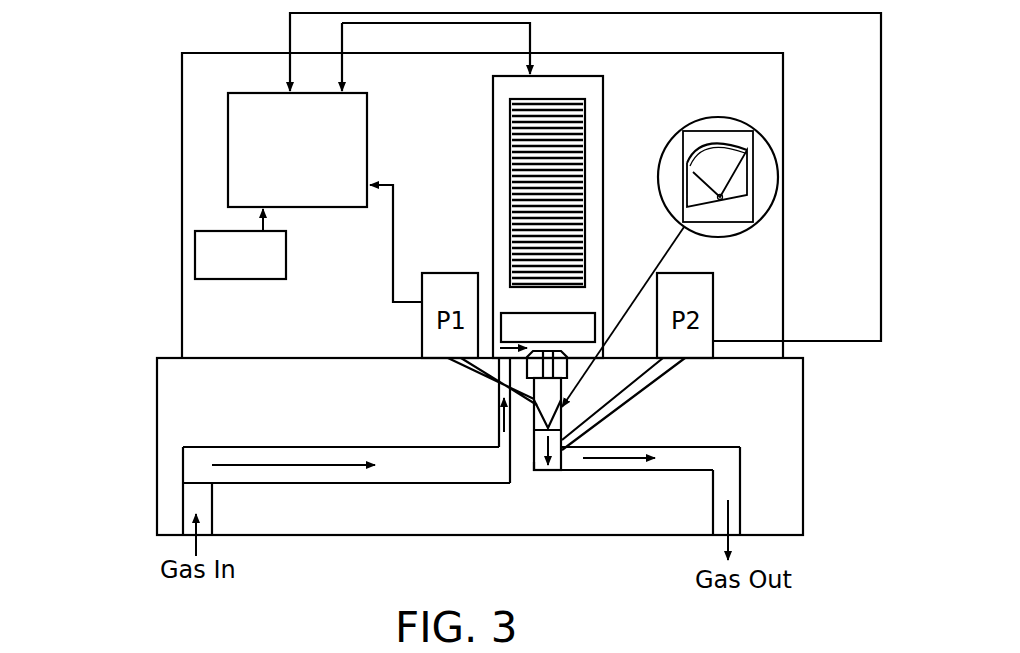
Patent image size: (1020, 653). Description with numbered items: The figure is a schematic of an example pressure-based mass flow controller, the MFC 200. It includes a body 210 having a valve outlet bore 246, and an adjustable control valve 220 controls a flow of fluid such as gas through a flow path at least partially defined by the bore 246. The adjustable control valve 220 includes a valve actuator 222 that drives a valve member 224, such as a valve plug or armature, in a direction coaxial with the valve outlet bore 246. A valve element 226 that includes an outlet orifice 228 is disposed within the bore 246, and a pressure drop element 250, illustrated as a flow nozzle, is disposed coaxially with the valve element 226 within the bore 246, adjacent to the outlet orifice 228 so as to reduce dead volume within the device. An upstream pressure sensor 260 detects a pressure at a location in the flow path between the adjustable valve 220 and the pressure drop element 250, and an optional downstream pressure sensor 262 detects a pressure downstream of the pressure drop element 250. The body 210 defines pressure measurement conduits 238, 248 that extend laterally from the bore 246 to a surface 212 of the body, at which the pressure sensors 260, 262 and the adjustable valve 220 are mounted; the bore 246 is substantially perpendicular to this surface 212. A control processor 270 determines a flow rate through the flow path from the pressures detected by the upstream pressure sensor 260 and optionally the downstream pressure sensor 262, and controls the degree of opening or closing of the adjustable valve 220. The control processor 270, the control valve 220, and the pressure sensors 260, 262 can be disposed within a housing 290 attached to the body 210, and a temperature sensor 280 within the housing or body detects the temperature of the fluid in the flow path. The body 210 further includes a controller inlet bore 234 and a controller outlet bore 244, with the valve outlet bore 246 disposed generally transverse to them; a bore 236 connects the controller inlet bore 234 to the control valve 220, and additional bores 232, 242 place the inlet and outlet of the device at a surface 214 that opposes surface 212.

The MFC 200 is at (75, 117).
The housing 290 is at (181, 93).
The control processor 270 is at (297, 150).
The temperature sensor 280 is at (240, 244).
The adjustable control valve 220 is at (605, 96).
The valve actuator 222 is at (525, 182).
The valve member 224 is at (498, 325).
The valve element 226 is at (568, 364).
The outlet orifice 228 is at (546, 385).
The pressure drop element 250 is at (727, 119).
The upstream pressure sensor 260 is at (413, 336).
The downstream pressure sensor 262 is at (717, 323).
The body 210 is at (172, 393).
The surface 212 is at (192, 353).
The surface 214 is at (333, 538).
The pressure measurement conduit 238 is at (472, 371).
The pressure measurement conduit 248 is at (592, 428).
The controller inlet bore 234 is at (332, 446).
The bore 236 is at (499, 428).
The additional bore 232 is at (183, 520).
The controller outlet bore 244 is at (577, 471).
The additional bore 242 is at (742, 497).
The valve outlet bore 246 is at (533, 460).